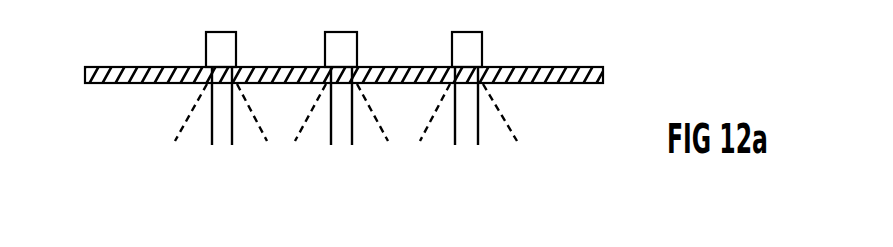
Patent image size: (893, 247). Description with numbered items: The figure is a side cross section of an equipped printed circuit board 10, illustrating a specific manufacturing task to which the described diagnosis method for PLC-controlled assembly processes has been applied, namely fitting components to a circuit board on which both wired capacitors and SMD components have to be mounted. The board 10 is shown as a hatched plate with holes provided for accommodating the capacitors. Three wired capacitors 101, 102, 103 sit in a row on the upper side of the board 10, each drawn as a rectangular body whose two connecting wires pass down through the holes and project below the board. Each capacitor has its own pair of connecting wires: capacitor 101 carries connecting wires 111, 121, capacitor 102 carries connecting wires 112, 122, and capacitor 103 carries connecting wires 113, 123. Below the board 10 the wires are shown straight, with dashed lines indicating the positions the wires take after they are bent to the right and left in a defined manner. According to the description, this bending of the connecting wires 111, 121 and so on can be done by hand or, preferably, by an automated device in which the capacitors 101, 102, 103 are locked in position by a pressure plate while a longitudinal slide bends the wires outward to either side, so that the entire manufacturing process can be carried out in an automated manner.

The printed circuit board 10 is at (132, 72).
The capacitor 101 is at (228, 43).
The capacitor 102 is at (349, 43).
The capacitor 103 is at (474, 43).
The connecting wire 111 is at (212, 129).
The connecting wire 112 is at (331, 129).
The connecting wire 113 is at (455, 129).
The connecting wire 121 is at (232, 129).
The connecting wire 122 is at (352, 129).
The connecting wire 123 is at (478, 129).